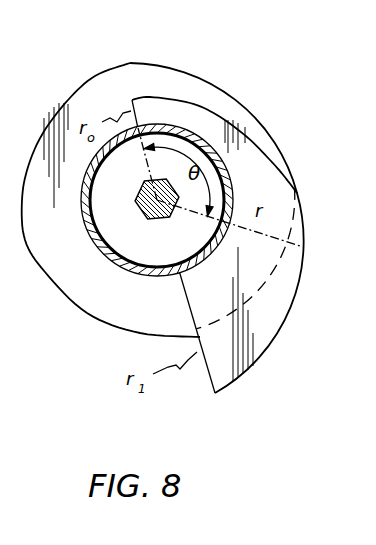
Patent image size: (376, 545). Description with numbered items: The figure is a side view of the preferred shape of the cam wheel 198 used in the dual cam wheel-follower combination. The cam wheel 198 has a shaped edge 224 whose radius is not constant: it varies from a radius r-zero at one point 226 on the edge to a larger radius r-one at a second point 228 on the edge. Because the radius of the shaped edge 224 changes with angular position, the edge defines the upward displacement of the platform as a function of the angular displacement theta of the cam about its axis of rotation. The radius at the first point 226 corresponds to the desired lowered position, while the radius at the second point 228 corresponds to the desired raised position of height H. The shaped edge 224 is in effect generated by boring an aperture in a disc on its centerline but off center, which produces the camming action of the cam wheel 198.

The cam wheel 198 is at (263, 320).
The shaped edge 224 is at (252, 130).
The first point on the edge 226 is at (139, 90).
The second point on the edge 228 is at (262, 430).